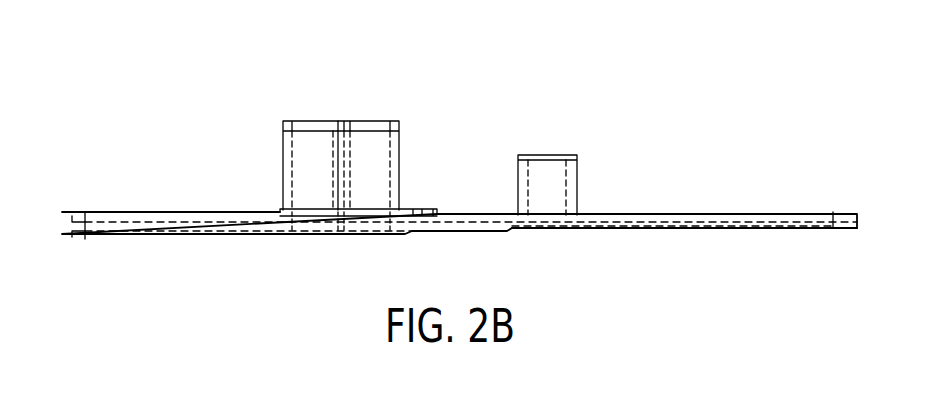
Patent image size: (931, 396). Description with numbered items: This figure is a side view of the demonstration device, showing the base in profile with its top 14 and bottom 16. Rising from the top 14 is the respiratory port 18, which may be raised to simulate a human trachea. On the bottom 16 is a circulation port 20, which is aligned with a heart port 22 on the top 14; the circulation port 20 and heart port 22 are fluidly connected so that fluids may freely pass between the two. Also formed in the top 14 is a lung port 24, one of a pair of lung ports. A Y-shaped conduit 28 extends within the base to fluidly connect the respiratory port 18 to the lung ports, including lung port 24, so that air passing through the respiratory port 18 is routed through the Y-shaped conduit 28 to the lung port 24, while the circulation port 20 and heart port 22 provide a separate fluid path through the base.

The top 14 is at (707, 213).
The bottom 16 is at (617, 230).
The respiratory port 18 is at (577, 155).
The circulation port 20 is at (305, 230).
The heart port 22 is at (303, 122).
The lung port 24 is at (399, 138).
The Y-shaped conduit 28 is at (468, 215).